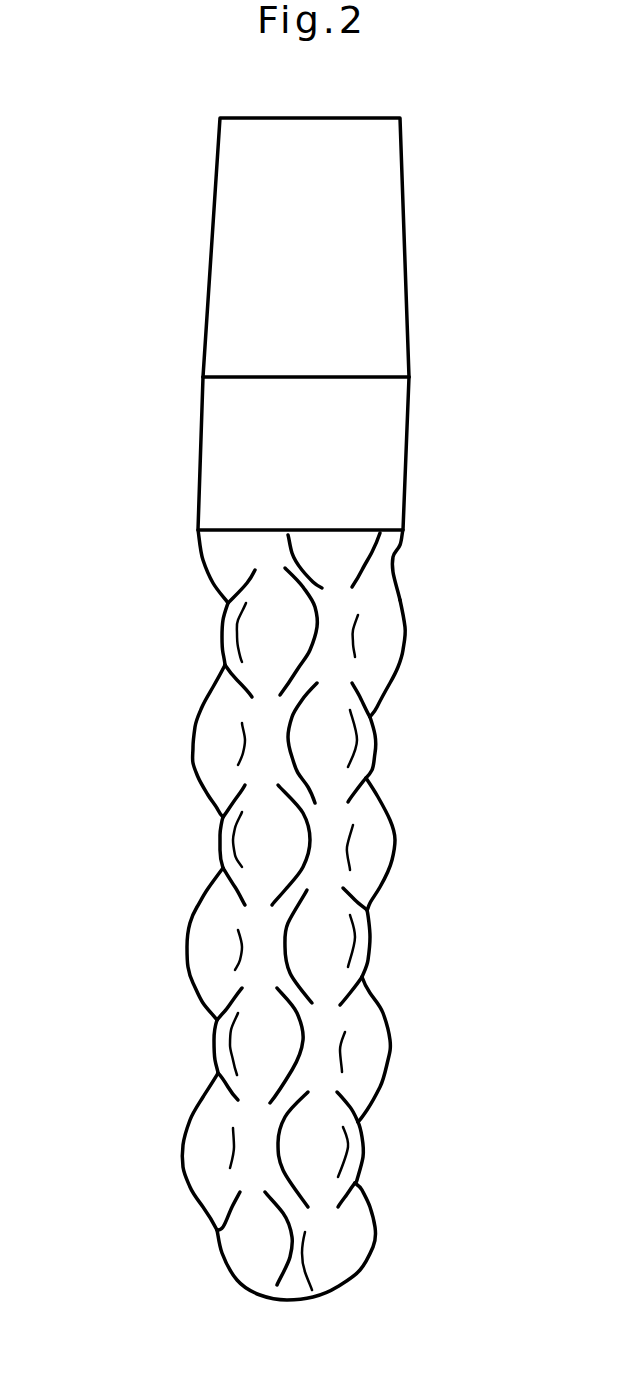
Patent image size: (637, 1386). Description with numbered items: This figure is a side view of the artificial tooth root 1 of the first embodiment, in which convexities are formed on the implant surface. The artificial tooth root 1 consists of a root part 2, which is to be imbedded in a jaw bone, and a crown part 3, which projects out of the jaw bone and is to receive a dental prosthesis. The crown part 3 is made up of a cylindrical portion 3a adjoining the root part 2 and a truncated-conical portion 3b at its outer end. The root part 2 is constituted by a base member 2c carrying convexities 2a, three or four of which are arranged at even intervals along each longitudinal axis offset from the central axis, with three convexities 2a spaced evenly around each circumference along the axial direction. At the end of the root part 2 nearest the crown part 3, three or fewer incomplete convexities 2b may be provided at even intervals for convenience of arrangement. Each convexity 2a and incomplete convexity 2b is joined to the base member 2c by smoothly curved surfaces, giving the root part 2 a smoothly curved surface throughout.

The artificial tooth root 1 is at (130, 631).
The root part 2 is at (188, 1191).
The convexities 2a is at (403, 653).
The incomplete convexities 2b is at (203, 570).
The base member 2c is at (298, 1218).
The crown part 3 is at (210, 230).
The cylindrical portion 3a is at (200, 435).
The truncated-conical portion 3b is at (208, 297).